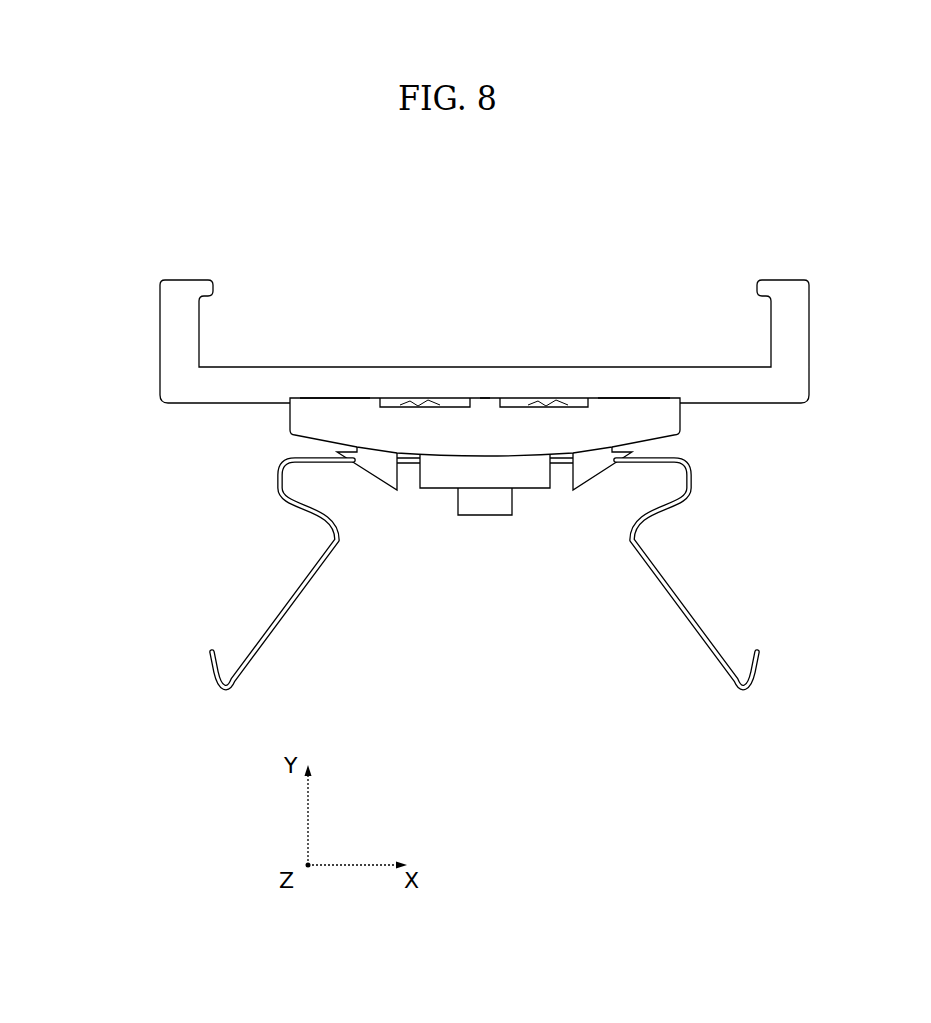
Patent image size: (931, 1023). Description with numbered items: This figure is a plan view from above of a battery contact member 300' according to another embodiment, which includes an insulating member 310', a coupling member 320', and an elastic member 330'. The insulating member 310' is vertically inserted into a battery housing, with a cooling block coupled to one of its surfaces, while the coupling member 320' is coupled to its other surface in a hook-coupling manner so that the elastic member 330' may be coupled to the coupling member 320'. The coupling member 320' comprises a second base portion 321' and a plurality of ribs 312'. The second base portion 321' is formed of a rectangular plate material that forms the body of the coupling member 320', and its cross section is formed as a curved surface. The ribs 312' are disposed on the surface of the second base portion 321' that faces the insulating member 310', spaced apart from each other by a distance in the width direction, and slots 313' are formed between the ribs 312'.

The battery contact member 300' is at (319, 194).
The insulating member 310' is at (428, 382).
The ribs 312' is at (487, 343).
The slots 313' is at (487, 348).
The coupling member 320' is at (422, 461).
The second base portion 321' is at (493, 506).
The elastic member 330' is at (518, 574).